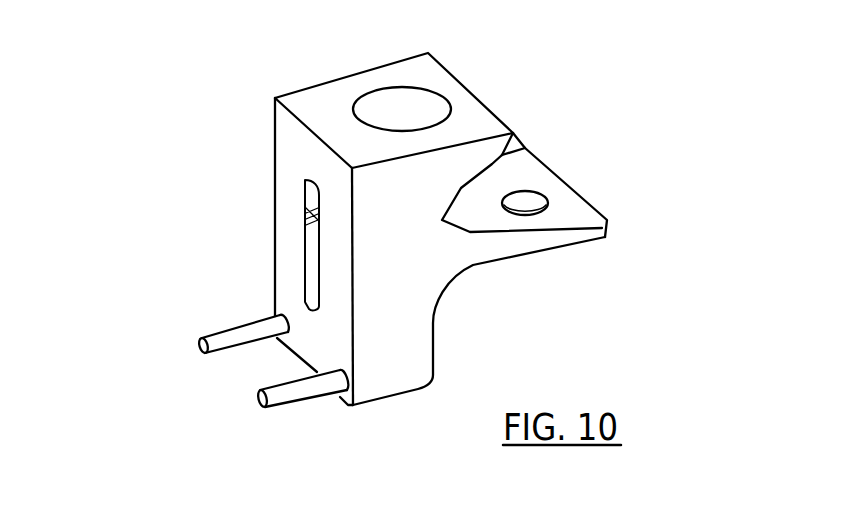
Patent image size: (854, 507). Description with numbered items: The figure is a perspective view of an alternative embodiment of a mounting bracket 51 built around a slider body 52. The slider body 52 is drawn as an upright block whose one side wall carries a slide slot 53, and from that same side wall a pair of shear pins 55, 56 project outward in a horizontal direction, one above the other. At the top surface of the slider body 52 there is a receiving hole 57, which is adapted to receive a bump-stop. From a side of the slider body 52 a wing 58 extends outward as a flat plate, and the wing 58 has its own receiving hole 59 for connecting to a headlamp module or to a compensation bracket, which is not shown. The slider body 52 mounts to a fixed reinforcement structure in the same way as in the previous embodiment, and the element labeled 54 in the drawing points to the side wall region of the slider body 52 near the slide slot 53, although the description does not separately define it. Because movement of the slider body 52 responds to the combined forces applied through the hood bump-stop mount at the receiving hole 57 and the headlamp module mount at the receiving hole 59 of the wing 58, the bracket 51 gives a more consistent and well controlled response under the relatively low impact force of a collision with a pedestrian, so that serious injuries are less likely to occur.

The mounting bracket 51 is at (224, 232).
The slider body 52 is at (413, 268).
The slide slot 53 is at (312, 257).
The block 54 is at (287, 276).
The shear pin 55 is at (233, 343).
The shear pin 56 is at (290, 400).
The receiving hole 57 is at (393, 105).
The wing 58 is at (573, 207).
The receiving hole 59 is at (528, 198).